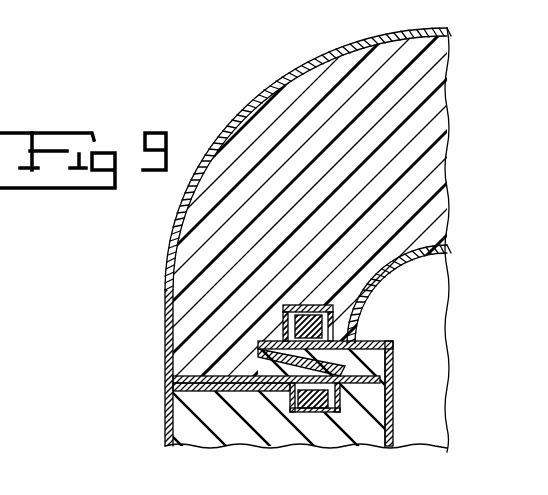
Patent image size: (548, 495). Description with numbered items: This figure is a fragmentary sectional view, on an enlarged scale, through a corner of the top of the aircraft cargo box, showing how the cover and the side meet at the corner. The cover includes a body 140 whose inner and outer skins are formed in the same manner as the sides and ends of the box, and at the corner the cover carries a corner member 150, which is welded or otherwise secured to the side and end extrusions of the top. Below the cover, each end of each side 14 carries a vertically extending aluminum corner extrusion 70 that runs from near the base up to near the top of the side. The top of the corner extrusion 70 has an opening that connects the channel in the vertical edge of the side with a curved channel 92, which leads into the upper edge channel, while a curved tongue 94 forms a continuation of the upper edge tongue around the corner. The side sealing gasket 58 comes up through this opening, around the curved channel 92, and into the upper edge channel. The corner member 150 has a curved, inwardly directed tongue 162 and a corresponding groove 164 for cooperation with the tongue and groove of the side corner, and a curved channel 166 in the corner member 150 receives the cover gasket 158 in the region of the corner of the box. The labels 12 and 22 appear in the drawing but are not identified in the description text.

The corner member 150 is at (234, 102).
The body 140 is at (437, 156).
The side 14 is at (547, 52).
The device 12 is at (547, 306).
The member 22 is at (538, 272).
The corner extrusion 70 is at (393, 406).
The tongue 162 is at (393, 354).
The curved tongue 94 is at (262, 344).
The groove 164 is at (262, 335).
The curved channel 166 is at (335, 300).
The cover gasket 158 is at (340, 324).
The sealing gasket 58 is at (285, 428).
The curved channel 92 is at (320, 425).